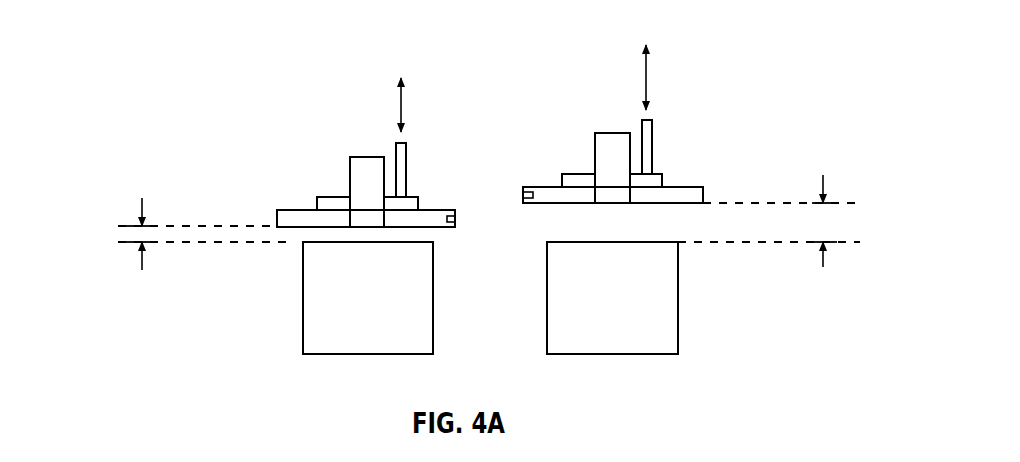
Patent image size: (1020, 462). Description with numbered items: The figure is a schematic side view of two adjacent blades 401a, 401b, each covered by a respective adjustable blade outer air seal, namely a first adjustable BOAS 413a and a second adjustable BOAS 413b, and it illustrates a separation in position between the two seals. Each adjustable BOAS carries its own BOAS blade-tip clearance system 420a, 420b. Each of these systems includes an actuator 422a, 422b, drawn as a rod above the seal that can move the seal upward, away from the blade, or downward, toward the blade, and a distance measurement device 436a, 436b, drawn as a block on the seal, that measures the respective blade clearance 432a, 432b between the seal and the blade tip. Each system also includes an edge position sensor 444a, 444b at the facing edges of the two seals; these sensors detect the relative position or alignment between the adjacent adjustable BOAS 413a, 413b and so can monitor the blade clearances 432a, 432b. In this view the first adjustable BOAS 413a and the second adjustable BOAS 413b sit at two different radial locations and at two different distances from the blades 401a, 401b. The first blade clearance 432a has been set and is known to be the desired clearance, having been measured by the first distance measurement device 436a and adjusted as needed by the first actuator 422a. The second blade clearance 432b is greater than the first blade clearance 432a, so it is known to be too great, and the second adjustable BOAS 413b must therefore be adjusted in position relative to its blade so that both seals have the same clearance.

The first blade 401a is at (397, 311).
The second blade 401b is at (640, 311).
The first adjustable BOAS 413a is at (285, 218).
The second adjustable BOAS 413b is at (692, 197).
The first BOAS blade-tip clearance system 420a is at (309, 163).
The second BOAS blade-tip clearance system 420b is at (551, 116).
The first actuator 422a is at (408, 168).
The second actuator 422b is at (652, 147).
The first distance measurement device 436a is at (368, 165).
The second distance measurement device 436b is at (615, 143).
The first edge position sensor 444a is at (456, 220).
The second edge position sensor 444b is at (524, 195).
The first blade clearance 432a is at (140, 210).
The second blade clearance 432b is at (826, 188).